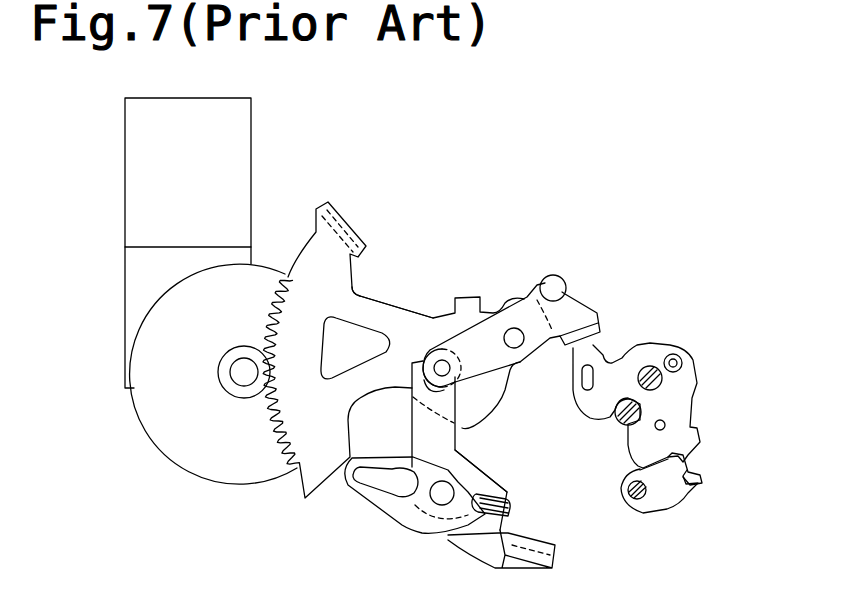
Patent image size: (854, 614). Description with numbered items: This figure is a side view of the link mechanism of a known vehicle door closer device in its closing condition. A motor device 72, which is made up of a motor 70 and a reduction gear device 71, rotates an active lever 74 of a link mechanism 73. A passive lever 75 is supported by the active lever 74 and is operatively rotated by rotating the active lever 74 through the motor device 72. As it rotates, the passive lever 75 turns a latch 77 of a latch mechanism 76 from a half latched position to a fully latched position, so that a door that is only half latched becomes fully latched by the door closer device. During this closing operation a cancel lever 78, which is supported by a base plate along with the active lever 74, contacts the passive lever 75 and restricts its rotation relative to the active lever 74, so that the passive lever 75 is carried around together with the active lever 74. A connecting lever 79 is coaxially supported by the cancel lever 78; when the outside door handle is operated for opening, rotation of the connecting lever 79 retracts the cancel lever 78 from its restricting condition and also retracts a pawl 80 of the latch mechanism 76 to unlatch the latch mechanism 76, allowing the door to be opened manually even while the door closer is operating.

The motor 70 is at (127, 157).
The reduction gear device 71 is at (170, 446).
The motor device 72 is at (313, 139).
The link mechanism 73 is at (491, 229).
The active lever 74 is at (377, 305).
The passive lever 75 is at (583, 305).
The latch mechanism 76 is at (720, 296).
The latch 77 is at (685, 392).
The cancel lever 78 is at (473, 468).
The connecting lever 79 is at (385, 507).
The pawl 80 is at (670, 498).